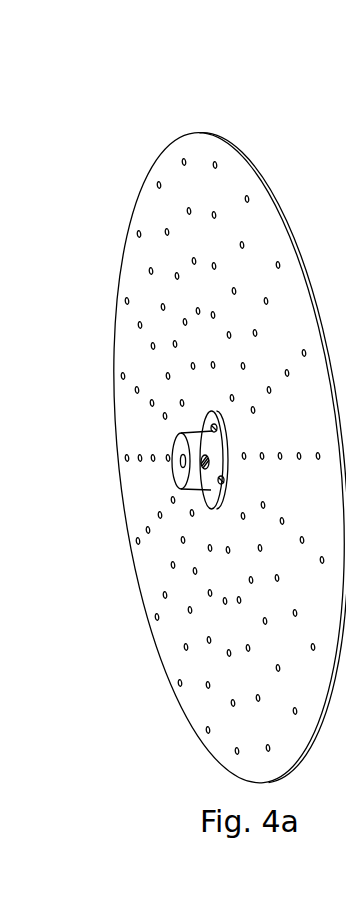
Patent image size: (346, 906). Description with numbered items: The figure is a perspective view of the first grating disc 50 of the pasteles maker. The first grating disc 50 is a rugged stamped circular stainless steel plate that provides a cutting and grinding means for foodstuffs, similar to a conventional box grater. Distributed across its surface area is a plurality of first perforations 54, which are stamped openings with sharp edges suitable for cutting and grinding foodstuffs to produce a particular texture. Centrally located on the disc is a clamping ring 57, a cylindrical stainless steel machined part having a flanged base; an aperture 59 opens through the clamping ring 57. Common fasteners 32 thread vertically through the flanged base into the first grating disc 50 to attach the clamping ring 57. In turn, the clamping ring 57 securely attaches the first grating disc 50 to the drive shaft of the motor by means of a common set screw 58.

The first grating disc 50 is at (285, 152).
The first perforation 54 is at (247, 196).
The clamping ring 57 is at (180, 446).
The aperture 59 is at (182, 470).
The set screw 58 is at (203, 466).
The fastener 32 is at (211, 494).